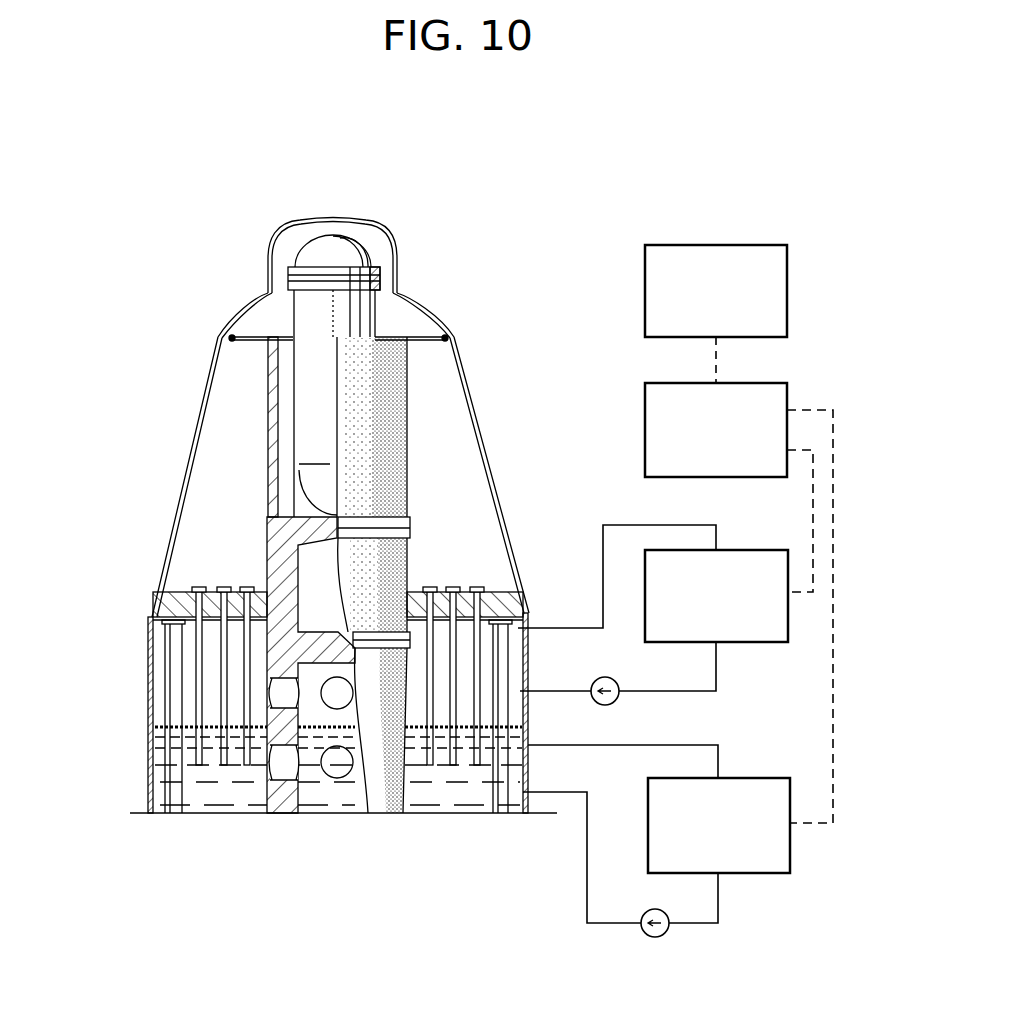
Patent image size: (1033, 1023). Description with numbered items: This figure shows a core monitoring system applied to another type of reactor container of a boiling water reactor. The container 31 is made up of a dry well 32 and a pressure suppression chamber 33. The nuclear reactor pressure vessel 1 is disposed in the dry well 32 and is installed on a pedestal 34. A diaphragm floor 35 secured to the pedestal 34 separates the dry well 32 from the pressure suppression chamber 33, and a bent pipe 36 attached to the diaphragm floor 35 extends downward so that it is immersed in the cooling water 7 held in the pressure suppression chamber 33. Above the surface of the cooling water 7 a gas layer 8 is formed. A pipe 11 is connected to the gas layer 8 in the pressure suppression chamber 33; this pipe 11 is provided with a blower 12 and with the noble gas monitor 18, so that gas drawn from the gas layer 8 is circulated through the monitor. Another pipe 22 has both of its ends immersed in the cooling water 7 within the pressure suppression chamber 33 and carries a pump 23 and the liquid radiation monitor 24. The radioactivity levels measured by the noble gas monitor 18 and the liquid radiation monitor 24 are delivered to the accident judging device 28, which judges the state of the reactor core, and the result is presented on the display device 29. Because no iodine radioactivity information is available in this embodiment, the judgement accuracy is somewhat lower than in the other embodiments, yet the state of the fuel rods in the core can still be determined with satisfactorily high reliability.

The nuclear reactor pressure vessel 1 is at (307, 427).
The cooling water 7 is at (227, 808).
The gas layer 8 is at (208, 705).
The pipe 11 is at (580, 626).
The blower 12 is at (601, 703).
The noble gas monitor 18 is at (748, 643).
The pipe 22 is at (578, 748).
The pump 23 is at (646, 935).
The liquid radiation monitor 24 is at (776, 873).
The accident judging device 28 is at (645, 422).
The display device 29 is at (645, 300).
The container 31 is at (488, 458).
The dry well 32 is at (460, 422).
The pressure suppression chamber 33 is at (156, 690).
The pedestal 34 is at (407, 557).
The diaphragm floor 35 is at (466, 597).
The bent pipe 36 is at (478, 671).